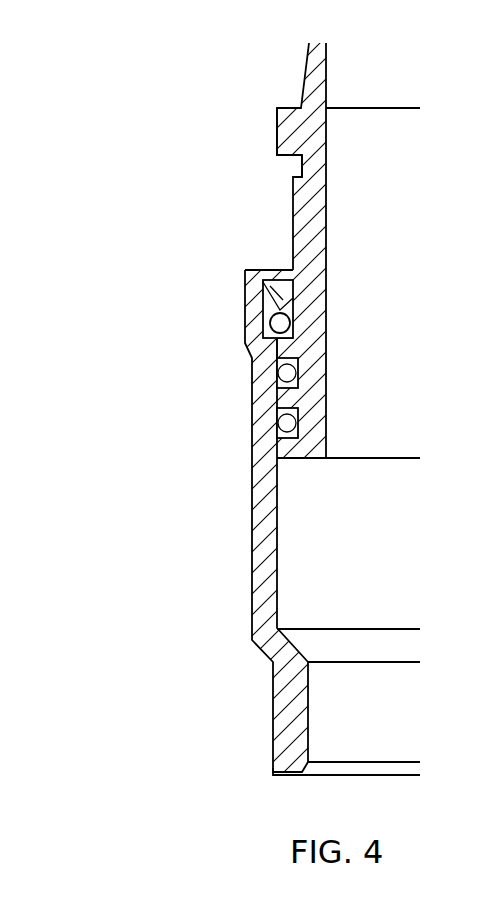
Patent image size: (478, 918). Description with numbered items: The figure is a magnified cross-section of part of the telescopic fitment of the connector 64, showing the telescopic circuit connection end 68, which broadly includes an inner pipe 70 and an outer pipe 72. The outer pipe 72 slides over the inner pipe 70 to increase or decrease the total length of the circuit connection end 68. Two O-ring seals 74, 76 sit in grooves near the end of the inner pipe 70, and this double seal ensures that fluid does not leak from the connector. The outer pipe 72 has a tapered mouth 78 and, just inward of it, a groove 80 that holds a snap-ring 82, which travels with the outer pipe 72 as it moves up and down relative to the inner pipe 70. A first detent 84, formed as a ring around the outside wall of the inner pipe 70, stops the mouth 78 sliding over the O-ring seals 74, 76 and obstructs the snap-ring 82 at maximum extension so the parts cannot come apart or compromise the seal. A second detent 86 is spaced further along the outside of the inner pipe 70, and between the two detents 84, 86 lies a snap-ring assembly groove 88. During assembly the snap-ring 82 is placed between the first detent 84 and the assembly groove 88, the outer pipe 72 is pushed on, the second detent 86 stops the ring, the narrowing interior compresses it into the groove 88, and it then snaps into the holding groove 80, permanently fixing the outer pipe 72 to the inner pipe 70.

The connector 64 is at (100, 113).
The telescopic circuit connection end 68 is at (365, 737).
The inner pipe 70 is at (308, 218).
The outer pipe 72 is at (262, 518).
The O-ring seal 74 is at (282, 375).
The O-ring seal 76 is at (282, 423).
The tapered mouth 78 is at (280, 297).
The groove 80 is at (260, 308).
The snap-ring 82 is at (272, 330).
The first detent 84 is at (290, 345).
The second detent 86 is at (305, 120).
The snap-ring assembly groove 88 is at (302, 167).